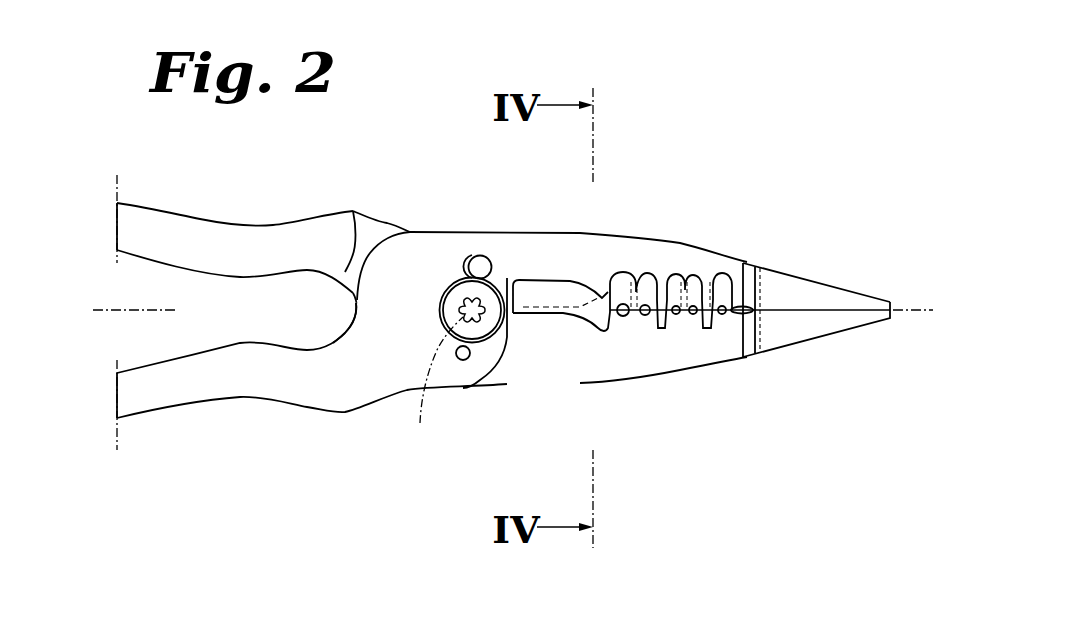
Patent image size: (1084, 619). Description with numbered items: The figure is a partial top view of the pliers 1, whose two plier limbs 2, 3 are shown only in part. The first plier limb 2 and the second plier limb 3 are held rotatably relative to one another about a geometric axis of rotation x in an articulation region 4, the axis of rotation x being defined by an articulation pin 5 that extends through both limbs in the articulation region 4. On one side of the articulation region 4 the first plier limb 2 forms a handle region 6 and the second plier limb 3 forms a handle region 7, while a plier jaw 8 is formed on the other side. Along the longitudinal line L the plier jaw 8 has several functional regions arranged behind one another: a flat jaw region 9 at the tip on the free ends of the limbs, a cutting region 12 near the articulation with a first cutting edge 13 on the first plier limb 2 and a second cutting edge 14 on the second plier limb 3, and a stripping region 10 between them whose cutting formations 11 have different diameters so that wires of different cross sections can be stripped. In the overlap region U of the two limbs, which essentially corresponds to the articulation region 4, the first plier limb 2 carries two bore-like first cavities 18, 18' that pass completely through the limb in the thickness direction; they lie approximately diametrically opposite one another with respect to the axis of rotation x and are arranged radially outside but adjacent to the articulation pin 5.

The pliers 1 is at (685, 188).
The first plier limb 2 is at (208, 391).
The second plier limb 3 is at (194, 232).
The articulation region 4 is at (385, 345).
The articulation pin 5 is at (487, 297).
The handle region 6 is at (137, 398).
The handle region 7 is at (130, 237).
The plier jaw 8 is at (708, 227).
The flat jaw region 9 is at (834, 284).
The stripping region 10 is at (722, 258).
The cutting formations 11 is at (626, 316).
The cutting region 12 is at (592, 291).
The first cutting edge 13 is at (540, 300).
The second cutting edge 14 is at (548, 313).
The first cavity 18 is at (481, 409).
The first cavity 18' is at (453, 214).
The overlap region U is at (392, 272).
The geometric axis of rotation x is at (436, 386).
The longitudinal line L is at (508, 309).